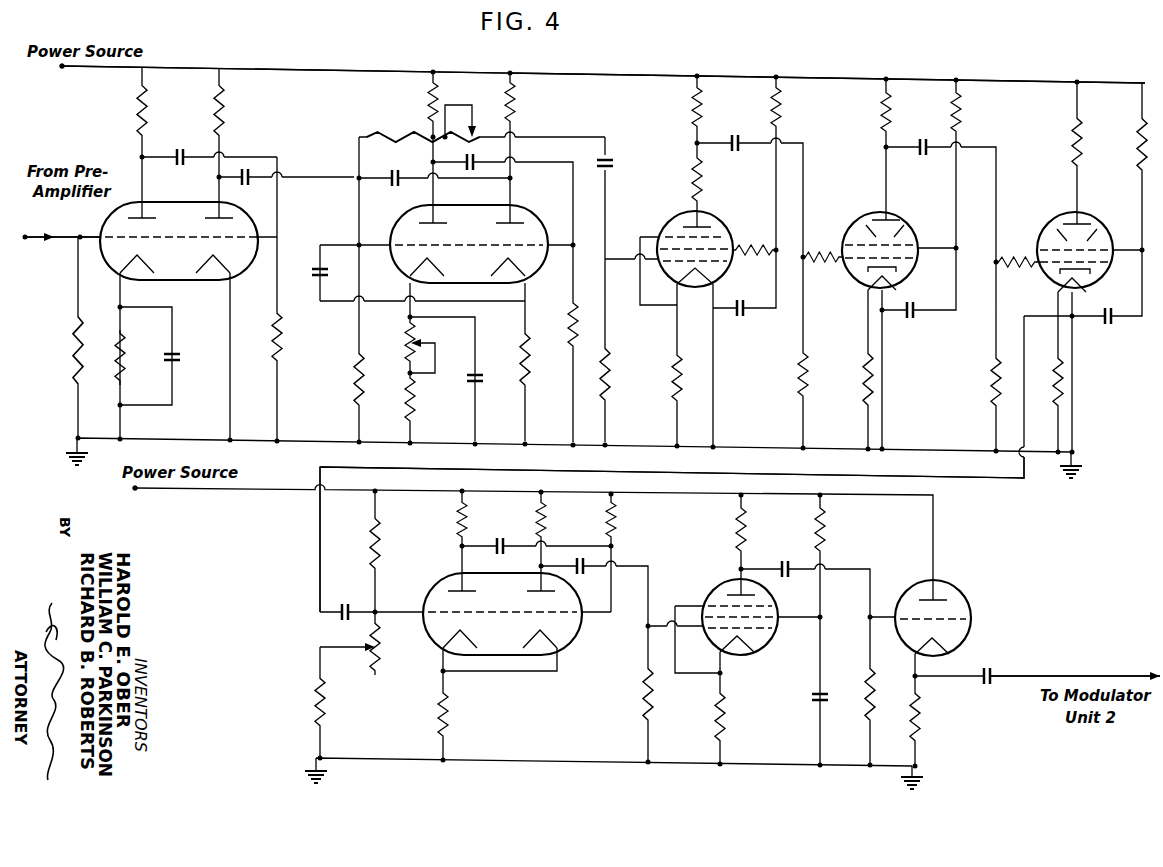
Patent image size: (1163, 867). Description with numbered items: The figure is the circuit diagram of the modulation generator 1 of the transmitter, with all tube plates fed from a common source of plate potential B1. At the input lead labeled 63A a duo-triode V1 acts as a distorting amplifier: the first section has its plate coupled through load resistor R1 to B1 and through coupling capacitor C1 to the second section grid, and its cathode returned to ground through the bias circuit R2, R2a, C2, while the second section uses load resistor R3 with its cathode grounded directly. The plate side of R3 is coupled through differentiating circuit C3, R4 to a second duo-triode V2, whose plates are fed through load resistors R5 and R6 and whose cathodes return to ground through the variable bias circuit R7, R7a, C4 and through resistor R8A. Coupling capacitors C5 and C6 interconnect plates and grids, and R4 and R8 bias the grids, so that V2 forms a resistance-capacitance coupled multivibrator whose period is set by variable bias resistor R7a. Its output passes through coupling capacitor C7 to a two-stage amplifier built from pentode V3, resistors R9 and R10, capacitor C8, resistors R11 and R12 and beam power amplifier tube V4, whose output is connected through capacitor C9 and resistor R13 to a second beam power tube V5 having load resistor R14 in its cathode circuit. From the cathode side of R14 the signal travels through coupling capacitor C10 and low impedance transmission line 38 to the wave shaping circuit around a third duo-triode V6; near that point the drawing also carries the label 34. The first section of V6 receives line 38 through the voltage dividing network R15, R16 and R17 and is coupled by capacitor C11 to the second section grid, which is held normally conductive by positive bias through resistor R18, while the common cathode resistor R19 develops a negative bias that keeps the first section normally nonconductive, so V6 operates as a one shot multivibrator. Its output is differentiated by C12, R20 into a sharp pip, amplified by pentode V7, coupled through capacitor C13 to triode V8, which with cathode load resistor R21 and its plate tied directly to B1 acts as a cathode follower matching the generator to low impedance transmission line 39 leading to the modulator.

The modulation generator 1 is at (872, 76).
The feedback connection 34 is at (320, 546).
The low impedance transmission line 38 is at (962, 479).
The low impedance transmission line 39 is at (1077, 677).
The input from pre-amplifier 63A is at (28, 234).
The common source of plate potential B1 is at (91, 287).
The duo-triode V1 is at (172, 247).
The second duo-triode V2 is at (460, 251).
The pentode V3 is at (689, 253).
The beam power amplifier tube V4 is at (877, 261).
The second beam power amplifier tube V5 is at (1068, 250).
The third duo-triode V6 is at (496, 611).
The pentode amplifier tube V7 is at (741, 628).
The triode V8 is at (940, 620).
The load resistor R1 is at (152, 111).
The bias circuit resistor R2 is at (87, 351).
The bias circuit resistor R2a is at (132, 357).
The load resistor R3 is at (229, 111).
The differentiating circuit resistor R4 is at (366, 380).
The load resistor R5 is at (424, 111).
The load resistor R6 is at (520, 102).
The variable bias circuit resistor R7 is at (419, 400).
The variable bias resistor R7a is at (423, 342).
The grid bias resistor R8 is at (581, 326).
The cathode resistor R8A is at (539, 360).
The amplifier resistor R9 is at (707, 107).
The amplifier resistor R10 is at (709, 181).
The amplifier resistor R11 is at (822, 272).
The amplifier resistor R12 is at (899, 112).
The coupling resistor R13 is at (1017, 275).
The load resistor R14 is at (1044, 382).
The voltage dividing network resistor R15 is at (388, 544).
The voltage dividing network resistor R16 is at (388, 647).
The voltage dividing network resistor R17 is at (333, 702).
The bias resistor R18 is at (624, 520).
The cathode resistor R19 is at (457, 715).
The differentiating circuit resistor R20 is at (662, 696).
The load resistor R21 is at (883, 695).
The coupling capacitor C1 is at (173, 166).
The bias circuit capacitor C2 is at (179, 370).
The differentiating circuit capacitor C3 is at (252, 188).
The variable bias circuit capacitor C4 is at (484, 390).
The coupling capacitor C5 is at (387, 189).
The coupling capacitor C6 is at (478, 170).
The coupling capacitor C7 is at (613, 176).
The amplifier capacitor C8 is at (735, 158).
The coupling capacitor C9 is at (919, 161).
The coupling capacitor C10 is at (341, 622).
The coupling capacitor C11 is at (511, 557).
The differentiating circuit capacitor C12 is at (591, 578).
The coupling capacitor C13 is at (796, 583).